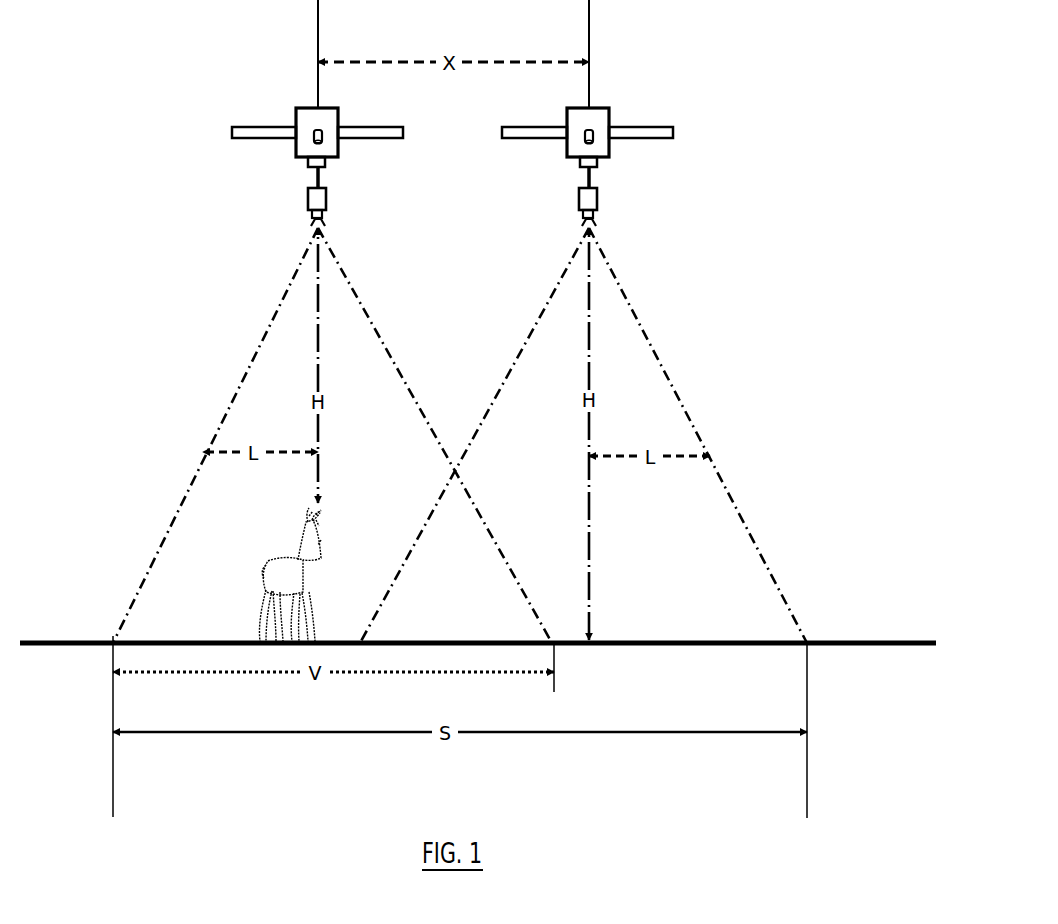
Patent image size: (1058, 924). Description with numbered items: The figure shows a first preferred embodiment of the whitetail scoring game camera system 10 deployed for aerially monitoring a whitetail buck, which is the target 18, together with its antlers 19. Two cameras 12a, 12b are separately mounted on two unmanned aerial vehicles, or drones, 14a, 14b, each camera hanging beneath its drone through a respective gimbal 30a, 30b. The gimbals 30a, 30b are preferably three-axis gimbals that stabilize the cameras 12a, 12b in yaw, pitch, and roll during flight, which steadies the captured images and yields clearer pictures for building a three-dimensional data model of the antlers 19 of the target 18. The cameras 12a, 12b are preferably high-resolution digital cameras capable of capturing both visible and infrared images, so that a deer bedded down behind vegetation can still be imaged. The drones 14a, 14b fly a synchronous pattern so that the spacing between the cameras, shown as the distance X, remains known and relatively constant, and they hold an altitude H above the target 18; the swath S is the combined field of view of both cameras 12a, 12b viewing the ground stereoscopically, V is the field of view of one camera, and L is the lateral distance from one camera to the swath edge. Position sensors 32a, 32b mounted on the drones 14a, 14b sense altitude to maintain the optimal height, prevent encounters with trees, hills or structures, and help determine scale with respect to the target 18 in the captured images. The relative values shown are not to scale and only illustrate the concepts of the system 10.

The system 10 is at (722, 133).
The unmanned aerial vehicle 14a is at (316, 107).
The unmanned aerial vehicle 14b is at (604, 108).
The position sensor 32a is at (313, 141).
The position sensor 32b is at (595, 138).
The gimbal 30a is at (320, 178).
The gimbal 30b is at (583, 183).
The camera 12a is at (305, 196).
The camera 12b is at (600, 197).
The target 18 is at (276, 560).
The antlers 19 is at (309, 513).